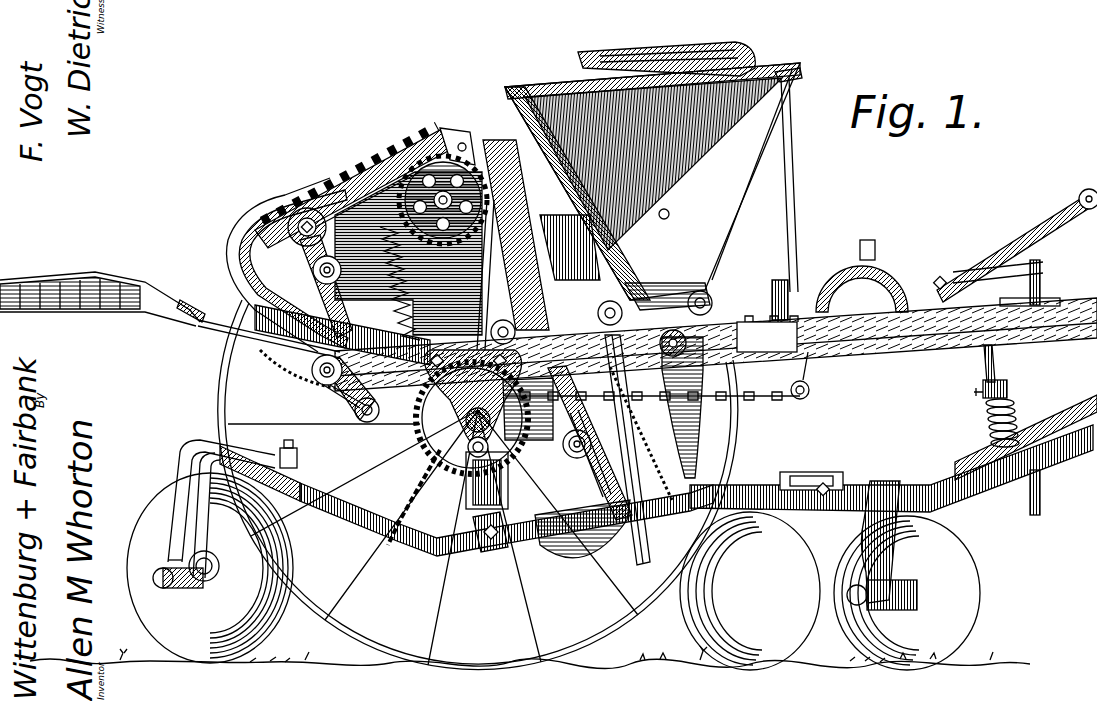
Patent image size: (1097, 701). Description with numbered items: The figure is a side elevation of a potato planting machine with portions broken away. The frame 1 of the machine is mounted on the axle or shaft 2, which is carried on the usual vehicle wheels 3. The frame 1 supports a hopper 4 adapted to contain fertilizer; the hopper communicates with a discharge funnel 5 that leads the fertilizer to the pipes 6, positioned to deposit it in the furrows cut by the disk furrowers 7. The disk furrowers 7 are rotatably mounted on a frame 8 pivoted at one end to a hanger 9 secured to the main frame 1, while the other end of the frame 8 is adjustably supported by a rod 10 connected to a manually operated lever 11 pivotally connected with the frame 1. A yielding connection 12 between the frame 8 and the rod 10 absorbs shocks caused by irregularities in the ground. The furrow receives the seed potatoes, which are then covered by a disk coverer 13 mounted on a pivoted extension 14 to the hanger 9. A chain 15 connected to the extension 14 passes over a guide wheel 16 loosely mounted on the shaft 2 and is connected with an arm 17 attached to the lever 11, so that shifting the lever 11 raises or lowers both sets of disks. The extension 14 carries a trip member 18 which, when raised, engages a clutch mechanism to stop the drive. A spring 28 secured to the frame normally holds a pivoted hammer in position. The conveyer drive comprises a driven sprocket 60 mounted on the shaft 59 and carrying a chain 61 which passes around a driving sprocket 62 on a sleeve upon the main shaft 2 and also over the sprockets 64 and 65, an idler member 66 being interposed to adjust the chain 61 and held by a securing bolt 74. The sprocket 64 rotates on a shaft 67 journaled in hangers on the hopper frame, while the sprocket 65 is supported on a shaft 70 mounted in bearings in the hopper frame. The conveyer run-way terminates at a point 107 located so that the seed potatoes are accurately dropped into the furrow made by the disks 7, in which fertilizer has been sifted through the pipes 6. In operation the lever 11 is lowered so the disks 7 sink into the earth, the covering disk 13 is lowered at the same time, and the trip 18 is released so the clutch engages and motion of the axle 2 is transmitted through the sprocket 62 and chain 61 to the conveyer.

The frame 1 is at (918, 344).
The axle or shaft 2 is at (430, 432).
The vehicle wheels 3 is at (364, 645).
The hopper 4 is at (652, 176).
The discharge funnel 5 is at (652, 388).
The pipes 6 is at (640, 550).
The disk furrowers 7 is at (830, 591).
The frame 8 is at (856, 494).
The hanger 9 is at (690, 441).
The rod 10 is at (995, 362).
The manually operated lever 11 is at (970, 256).
The yielding connection 12 is at (1008, 411).
The disk coverer 13 is at (210, 568).
The pivoted extension 14 is at (440, 538).
The chain 15 is at (364, 473).
The guide wheel 16 is at (562, 462).
The arm 17 is at (806, 382).
The trip member 18 is at (498, 548).
The spring 28 is at (421, 283).
The shaft 59 is at (447, 200).
The driven sprocket 60 is at (443, 173).
The chain 61 is at (382, 180).
The driving sprocket 62 is at (465, 497).
The sprocket 64 is at (333, 387).
The sprocket 65 is at (337, 266).
The idler member 66 is at (302, 218).
The shaft 67 is at (316, 375).
The shaft 70 is at (246, 232).
The securing bolt 74 is at (343, 190).
The point 107 is at (537, 548).